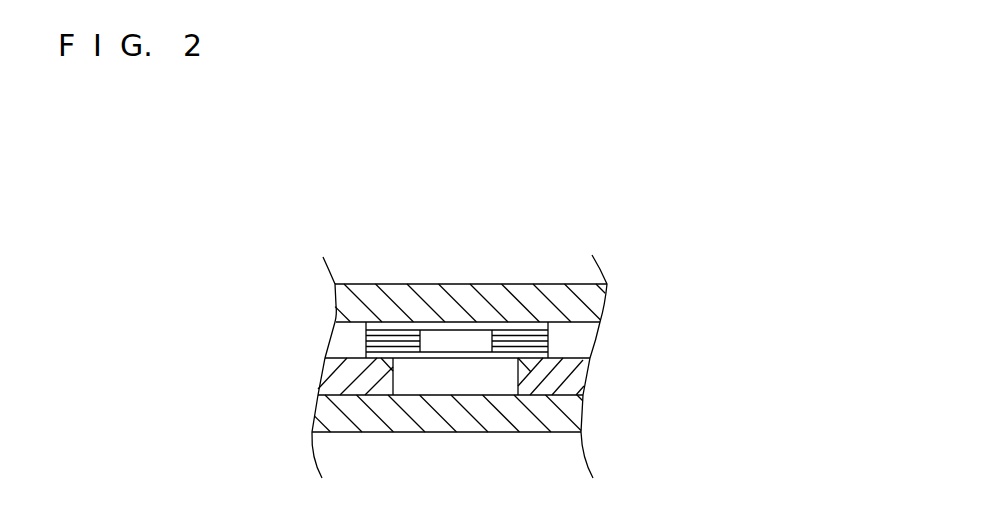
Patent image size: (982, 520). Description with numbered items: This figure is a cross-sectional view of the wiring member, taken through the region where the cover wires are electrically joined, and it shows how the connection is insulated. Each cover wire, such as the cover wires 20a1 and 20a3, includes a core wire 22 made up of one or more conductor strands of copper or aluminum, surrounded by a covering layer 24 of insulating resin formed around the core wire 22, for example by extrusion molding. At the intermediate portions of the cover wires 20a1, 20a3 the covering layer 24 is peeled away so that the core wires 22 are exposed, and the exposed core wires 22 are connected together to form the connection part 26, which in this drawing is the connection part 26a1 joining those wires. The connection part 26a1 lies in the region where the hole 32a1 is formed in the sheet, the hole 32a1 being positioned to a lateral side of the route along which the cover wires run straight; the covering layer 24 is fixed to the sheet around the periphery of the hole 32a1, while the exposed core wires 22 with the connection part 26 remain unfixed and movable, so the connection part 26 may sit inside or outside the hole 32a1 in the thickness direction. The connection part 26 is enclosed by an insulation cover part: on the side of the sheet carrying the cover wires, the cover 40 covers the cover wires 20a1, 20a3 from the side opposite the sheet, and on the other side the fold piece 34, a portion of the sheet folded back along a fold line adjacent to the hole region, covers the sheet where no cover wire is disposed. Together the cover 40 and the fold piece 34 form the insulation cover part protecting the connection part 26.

The cover 40 is at (513, 290).
The cover wire 20a3 is at (405, 221).
The cover wire 20a1 is at (600, 221).
The covering layer 24 is at (345, 333).
The core wire 22 is at (385, 327).
The connection part 26 is at (457, 295).
The connection part 26a1 is at (449, 340).
The hole 32a1 is at (393, 393).
The fold piece 34 is at (490, 420).